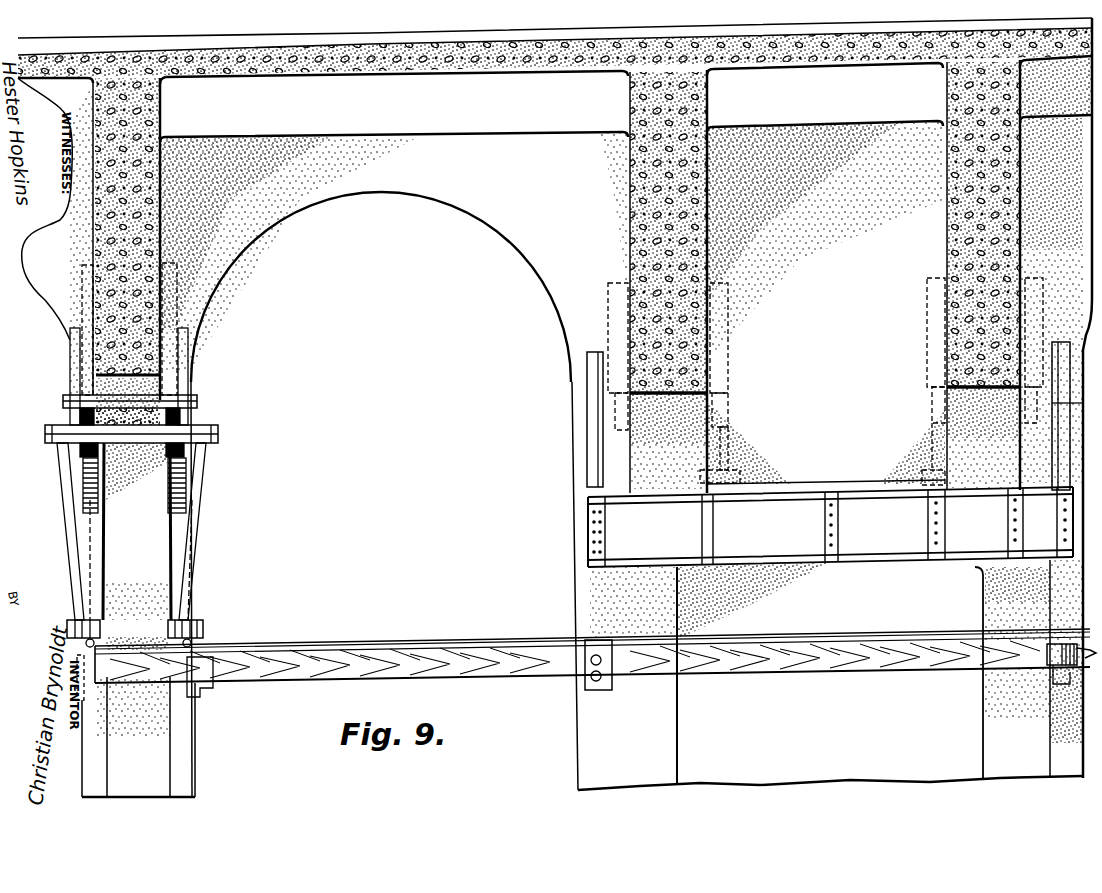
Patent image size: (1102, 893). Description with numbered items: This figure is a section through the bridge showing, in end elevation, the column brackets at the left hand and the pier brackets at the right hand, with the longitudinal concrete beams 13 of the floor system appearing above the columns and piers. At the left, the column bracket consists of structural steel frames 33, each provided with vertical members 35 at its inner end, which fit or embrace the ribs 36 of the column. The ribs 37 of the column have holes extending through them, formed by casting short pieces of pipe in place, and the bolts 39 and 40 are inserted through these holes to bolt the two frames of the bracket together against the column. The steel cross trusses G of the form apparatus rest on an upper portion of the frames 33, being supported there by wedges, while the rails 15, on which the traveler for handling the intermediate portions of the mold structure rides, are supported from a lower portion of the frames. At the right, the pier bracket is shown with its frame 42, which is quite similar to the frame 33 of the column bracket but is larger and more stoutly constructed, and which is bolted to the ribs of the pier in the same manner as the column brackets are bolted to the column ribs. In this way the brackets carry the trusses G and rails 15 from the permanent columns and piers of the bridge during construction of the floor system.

The longitudinal concrete beam 13 is at (384, 479).
The rails 15 is at (440, 646).
The frame 33 is at (191, 544).
The vertical member 35 is at (86, 518).
The rib of the column 36 is at (137, 546).
The rib of the column 37 is at (68, 413).
The bolt 39 is at (80, 470).
The bolt 40 is at (84, 630).
The frame 42 is at (598, 470).
The steel cross truss G is at (82, 285).